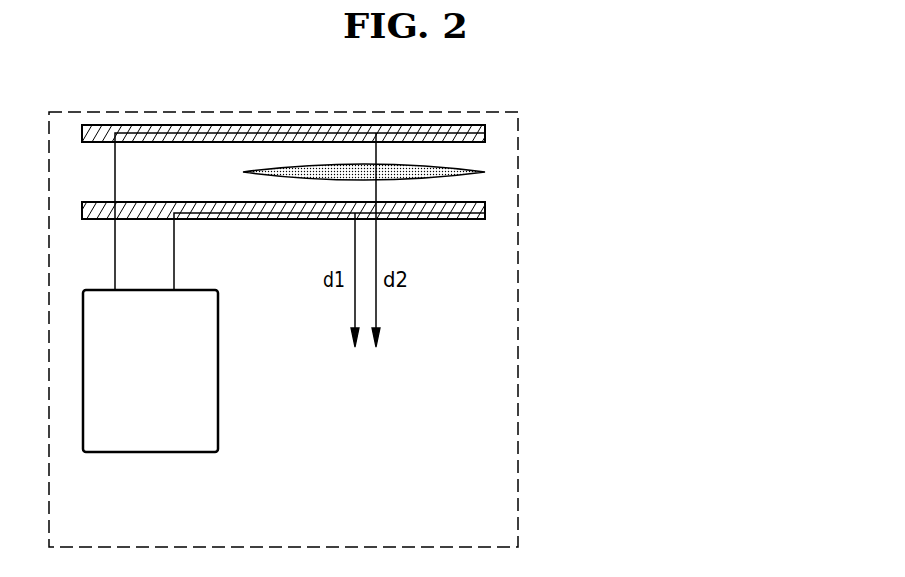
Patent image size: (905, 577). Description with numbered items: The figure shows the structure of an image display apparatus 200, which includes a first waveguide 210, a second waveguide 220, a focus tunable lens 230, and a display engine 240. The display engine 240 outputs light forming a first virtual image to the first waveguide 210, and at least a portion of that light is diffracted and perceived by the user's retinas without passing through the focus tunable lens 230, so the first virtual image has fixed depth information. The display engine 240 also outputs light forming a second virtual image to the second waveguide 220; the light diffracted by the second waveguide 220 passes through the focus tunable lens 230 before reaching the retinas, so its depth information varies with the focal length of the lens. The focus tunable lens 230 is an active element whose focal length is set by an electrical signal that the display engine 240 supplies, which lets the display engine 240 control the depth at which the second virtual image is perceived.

The image display apparatus 200 is at (452, 112).
The second waveguide 220 is at (486, 135).
The focus tunable lens 230 is at (486, 172).
The first waveguide 210 is at (486, 212).
The display engine 240 is at (150, 371).